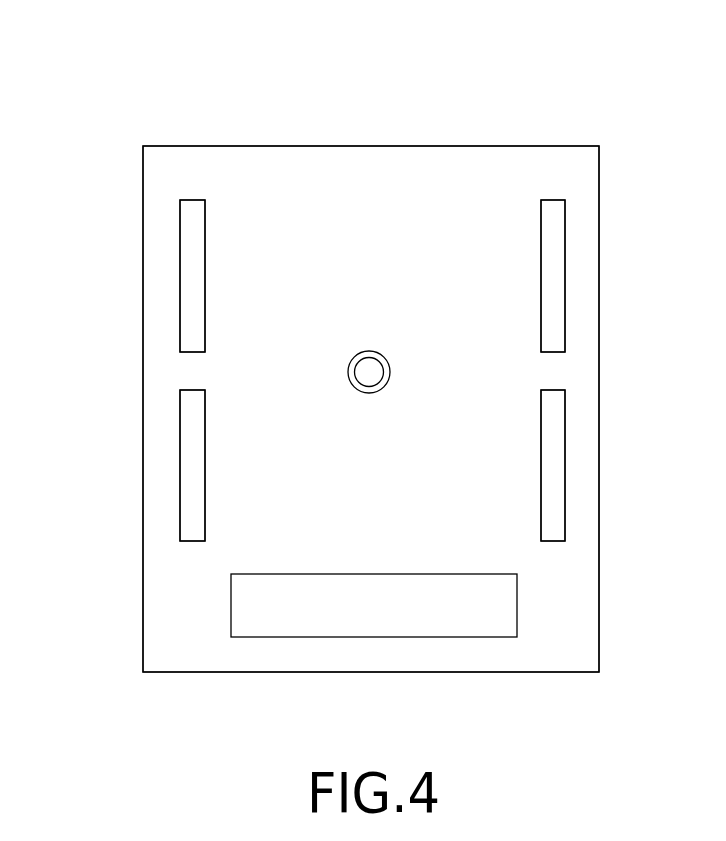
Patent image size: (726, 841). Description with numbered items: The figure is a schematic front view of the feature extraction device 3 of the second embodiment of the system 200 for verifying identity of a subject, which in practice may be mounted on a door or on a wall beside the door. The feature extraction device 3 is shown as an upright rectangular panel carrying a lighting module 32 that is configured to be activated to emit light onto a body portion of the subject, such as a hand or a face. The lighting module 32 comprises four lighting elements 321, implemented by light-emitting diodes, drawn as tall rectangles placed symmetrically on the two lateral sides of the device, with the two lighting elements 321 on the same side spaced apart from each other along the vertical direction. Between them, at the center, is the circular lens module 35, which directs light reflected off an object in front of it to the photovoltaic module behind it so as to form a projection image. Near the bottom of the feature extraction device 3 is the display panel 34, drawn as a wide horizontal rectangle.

The feature extraction device 3 is at (187, 130).
The system 200 is at (614, 125).
The lighting module 32 is at (576, 275).
The lighting elements 321 is at (189, 434).
The lens module 35 is at (369, 351).
The display panel 34 is at (476, 610).